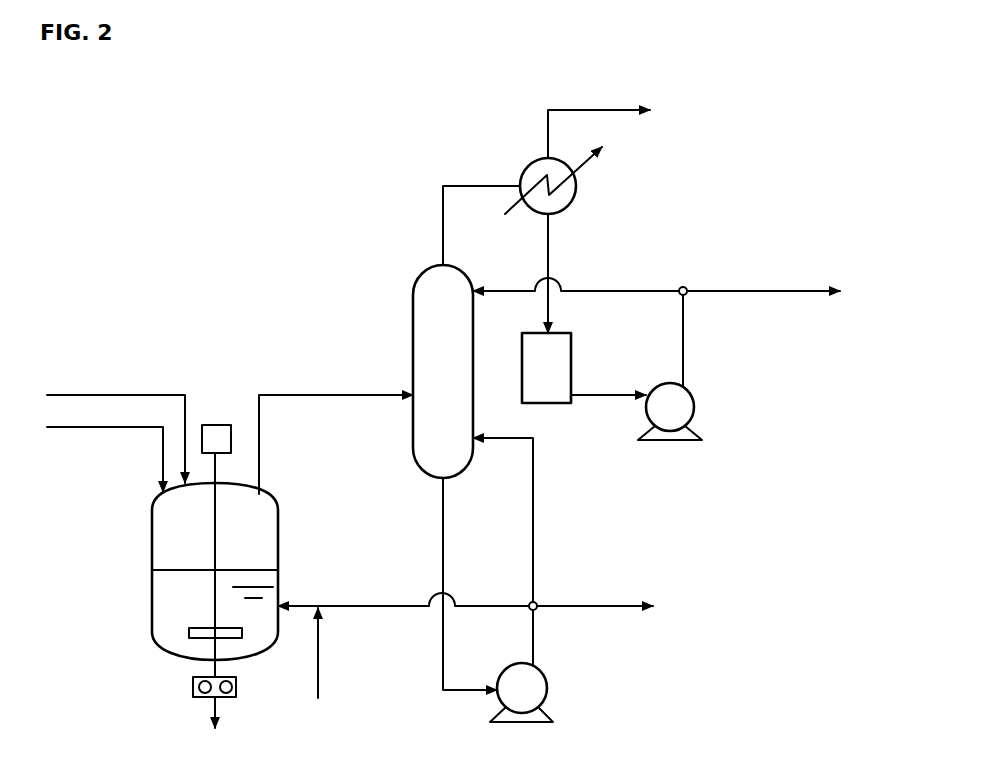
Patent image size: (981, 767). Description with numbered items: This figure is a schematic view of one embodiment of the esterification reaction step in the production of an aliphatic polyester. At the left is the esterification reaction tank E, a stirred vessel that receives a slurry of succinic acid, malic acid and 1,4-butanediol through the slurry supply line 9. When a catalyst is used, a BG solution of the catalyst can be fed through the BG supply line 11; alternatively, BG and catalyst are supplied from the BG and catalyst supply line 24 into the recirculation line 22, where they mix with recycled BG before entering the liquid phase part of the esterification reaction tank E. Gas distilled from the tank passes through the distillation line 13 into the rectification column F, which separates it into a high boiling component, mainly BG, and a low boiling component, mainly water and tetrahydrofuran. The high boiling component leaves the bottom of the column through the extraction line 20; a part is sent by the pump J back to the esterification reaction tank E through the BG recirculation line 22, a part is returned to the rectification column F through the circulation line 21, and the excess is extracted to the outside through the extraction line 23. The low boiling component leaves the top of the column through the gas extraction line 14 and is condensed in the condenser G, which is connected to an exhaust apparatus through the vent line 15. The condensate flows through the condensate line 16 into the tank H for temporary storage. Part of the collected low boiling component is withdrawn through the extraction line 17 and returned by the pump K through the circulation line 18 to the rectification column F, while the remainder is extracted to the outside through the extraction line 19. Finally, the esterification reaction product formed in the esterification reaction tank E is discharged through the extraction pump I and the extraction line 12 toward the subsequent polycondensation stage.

The slurry supply line 9 is at (124, 384).
The BG supply line 11 is at (96, 433).
The extraction line of the esterification reaction product 12 is at (228, 719).
The distillation line 13 is at (329, 393).
The gas extraction line 14 is at (440, 223).
The vent line 15 is at (599, 103).
The condensate line 16 is at (555, 249).
The extraction line 17 is at (609, 381).
The circulation line 18 is at (646, 286).
The extraction line 19 is at (774, 288).
The extraction line 20 is at (448, 539).
The circulation line 21 is at (540, 513).
The BG recirculation line 22 is at (369, 594).
The extraction line 23 is at (606, 604).
The BG and catalyst supply line 24 is at (325, 663).
The esterification reaction tank E is at (148, 549).
The rectification column F is at (409, 303).
The condenser G is at (588, 194).
The tank H is at (551, 409).
The extraction pump I is at (192, 691).
The pump J is at (552, 691).
The pump K is at (700, 406).